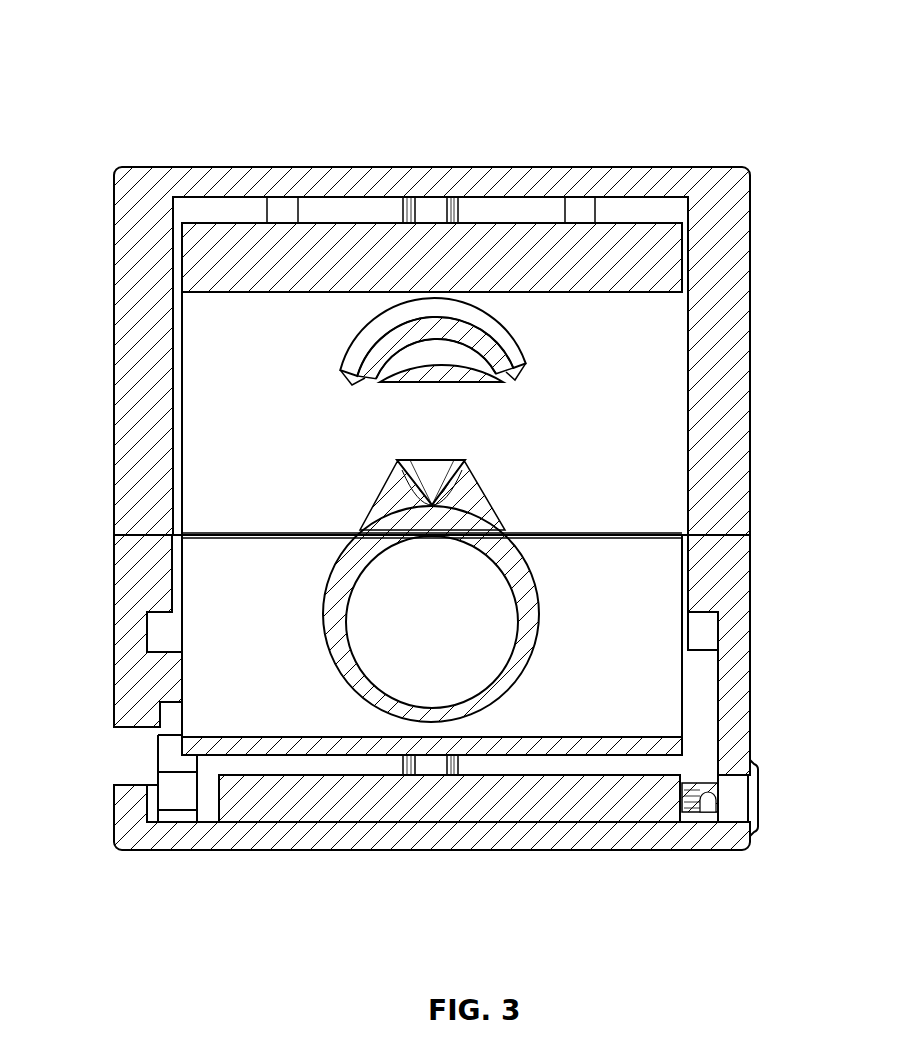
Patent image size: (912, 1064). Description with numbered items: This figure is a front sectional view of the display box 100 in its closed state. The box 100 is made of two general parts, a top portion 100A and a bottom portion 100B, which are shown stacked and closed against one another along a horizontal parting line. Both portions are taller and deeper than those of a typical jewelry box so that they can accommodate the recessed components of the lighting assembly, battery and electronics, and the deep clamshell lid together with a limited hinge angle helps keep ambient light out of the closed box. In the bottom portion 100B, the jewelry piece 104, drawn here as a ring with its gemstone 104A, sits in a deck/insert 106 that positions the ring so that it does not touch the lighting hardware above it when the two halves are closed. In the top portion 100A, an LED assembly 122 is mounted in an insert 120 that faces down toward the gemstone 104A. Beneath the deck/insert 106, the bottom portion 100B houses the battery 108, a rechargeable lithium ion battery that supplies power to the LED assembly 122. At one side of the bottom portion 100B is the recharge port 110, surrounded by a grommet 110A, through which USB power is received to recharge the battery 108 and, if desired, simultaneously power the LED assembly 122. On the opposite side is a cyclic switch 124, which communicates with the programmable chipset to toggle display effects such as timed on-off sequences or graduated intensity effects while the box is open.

The box 100 is at (124, 68).
The top portion 100A is at (751, 278).
The bottom portion 100B is at (752, 648).
The jewelry piece 104 is at (508, 510).
The gemstone 104A is at (448, 462).
The deck/insert 106 is at (656, 610).
The battery 108 is at (513, 812).
The recharge port 110 is at (740, 795).
The grommet 110A is at (760, 818).
The insert 120 is at (511, 352).
The LED assembly 122 is at (452, 361).
The cyclic switch 124 is at (173, 745).